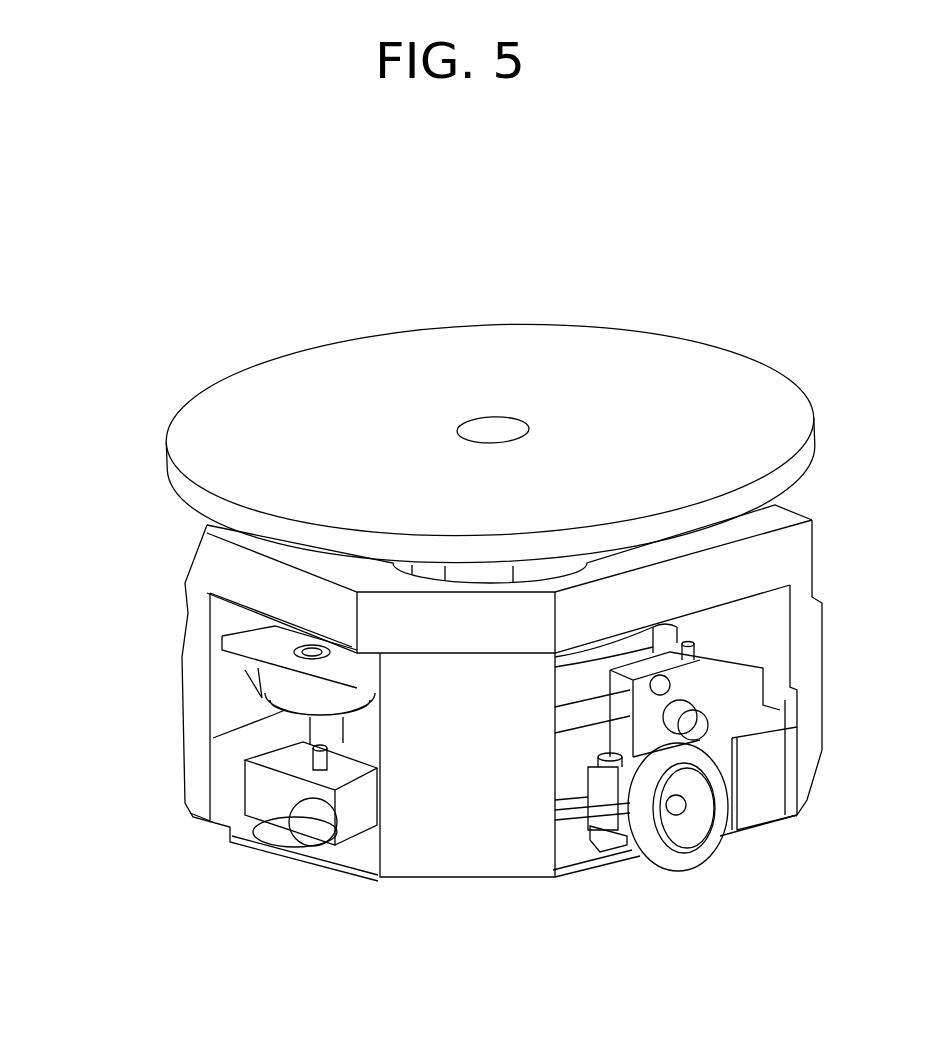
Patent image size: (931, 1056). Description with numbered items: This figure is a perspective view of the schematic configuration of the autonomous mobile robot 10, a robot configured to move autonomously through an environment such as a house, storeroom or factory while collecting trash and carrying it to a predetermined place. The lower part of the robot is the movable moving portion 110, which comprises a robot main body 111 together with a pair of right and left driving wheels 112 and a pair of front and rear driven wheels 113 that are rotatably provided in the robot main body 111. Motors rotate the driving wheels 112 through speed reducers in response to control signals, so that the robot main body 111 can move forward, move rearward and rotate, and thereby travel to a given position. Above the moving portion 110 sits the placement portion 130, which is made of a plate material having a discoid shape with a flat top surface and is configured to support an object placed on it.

The autonomous mobile robot 10 is at (820, 165).
The moving portion 110 is at (128, 698).
The robot main body 111 is at (187, 612).
The driving wheels 112 is at (697, 847).
The driven wheels 113 is at (300, 840).
The placement portion 130 is at (165, 456).